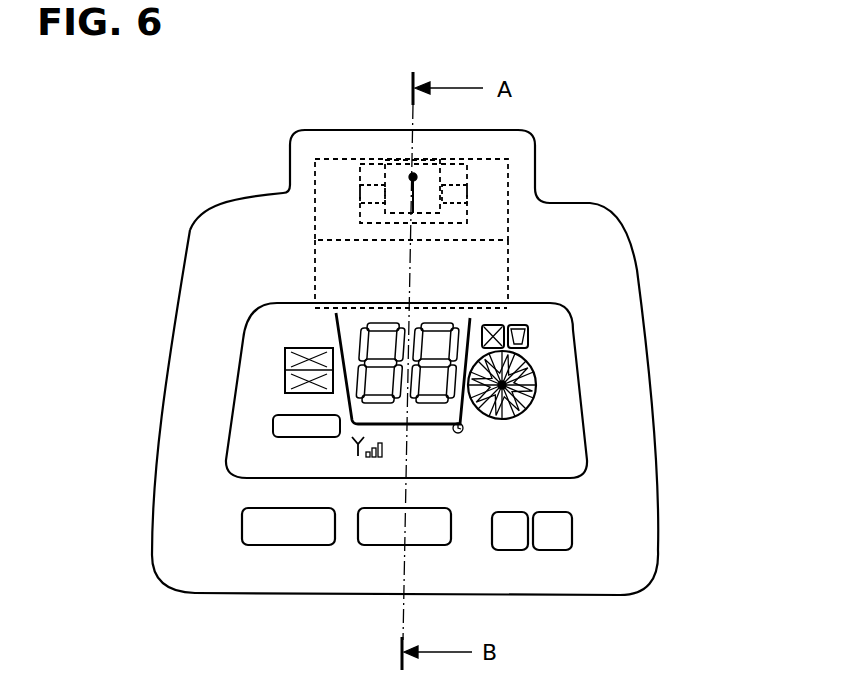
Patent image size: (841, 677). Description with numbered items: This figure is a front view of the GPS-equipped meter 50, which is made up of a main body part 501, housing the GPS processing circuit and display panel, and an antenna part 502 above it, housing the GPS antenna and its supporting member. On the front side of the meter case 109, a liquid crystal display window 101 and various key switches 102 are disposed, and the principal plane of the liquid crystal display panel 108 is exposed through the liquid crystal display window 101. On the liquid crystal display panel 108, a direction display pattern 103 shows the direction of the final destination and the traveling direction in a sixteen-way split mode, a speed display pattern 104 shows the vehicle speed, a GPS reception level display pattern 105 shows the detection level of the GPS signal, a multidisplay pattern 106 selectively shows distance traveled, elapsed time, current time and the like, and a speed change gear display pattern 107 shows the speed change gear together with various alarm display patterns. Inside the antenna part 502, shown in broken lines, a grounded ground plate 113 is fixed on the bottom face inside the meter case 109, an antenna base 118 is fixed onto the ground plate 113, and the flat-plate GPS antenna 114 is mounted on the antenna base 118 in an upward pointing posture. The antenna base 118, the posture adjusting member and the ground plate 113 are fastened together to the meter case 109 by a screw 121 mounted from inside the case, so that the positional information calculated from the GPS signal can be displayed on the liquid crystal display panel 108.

The GPS-equipped meter 50 is at (650, 250).
The main body part 501 is at (658, 452).
The antenna part 502 is at (507, 130).
The liquid crystal display window 101 is at (575, 342).
The key switches 102 is at (577, 550).
The direction display pattern 103 is at (537, 402).
The speed display pattern 104 is at (452, 318).
The GPS reception level display pattern 105 is at (358, 450).
The multidisplay pattern 106 is at (482, 463).
The speed change gear display pattern 107 is at (273, 380).
The liquid crystal display panel 108 is at (565, 388).
The meter case 109 is at (643, 577).
The ground plate 113 is at (500, 170).
The GPS antenna 114 is at (397, 172).
The antenna base 118 is at (370, 178).
The screw 121 is at (445, 193).